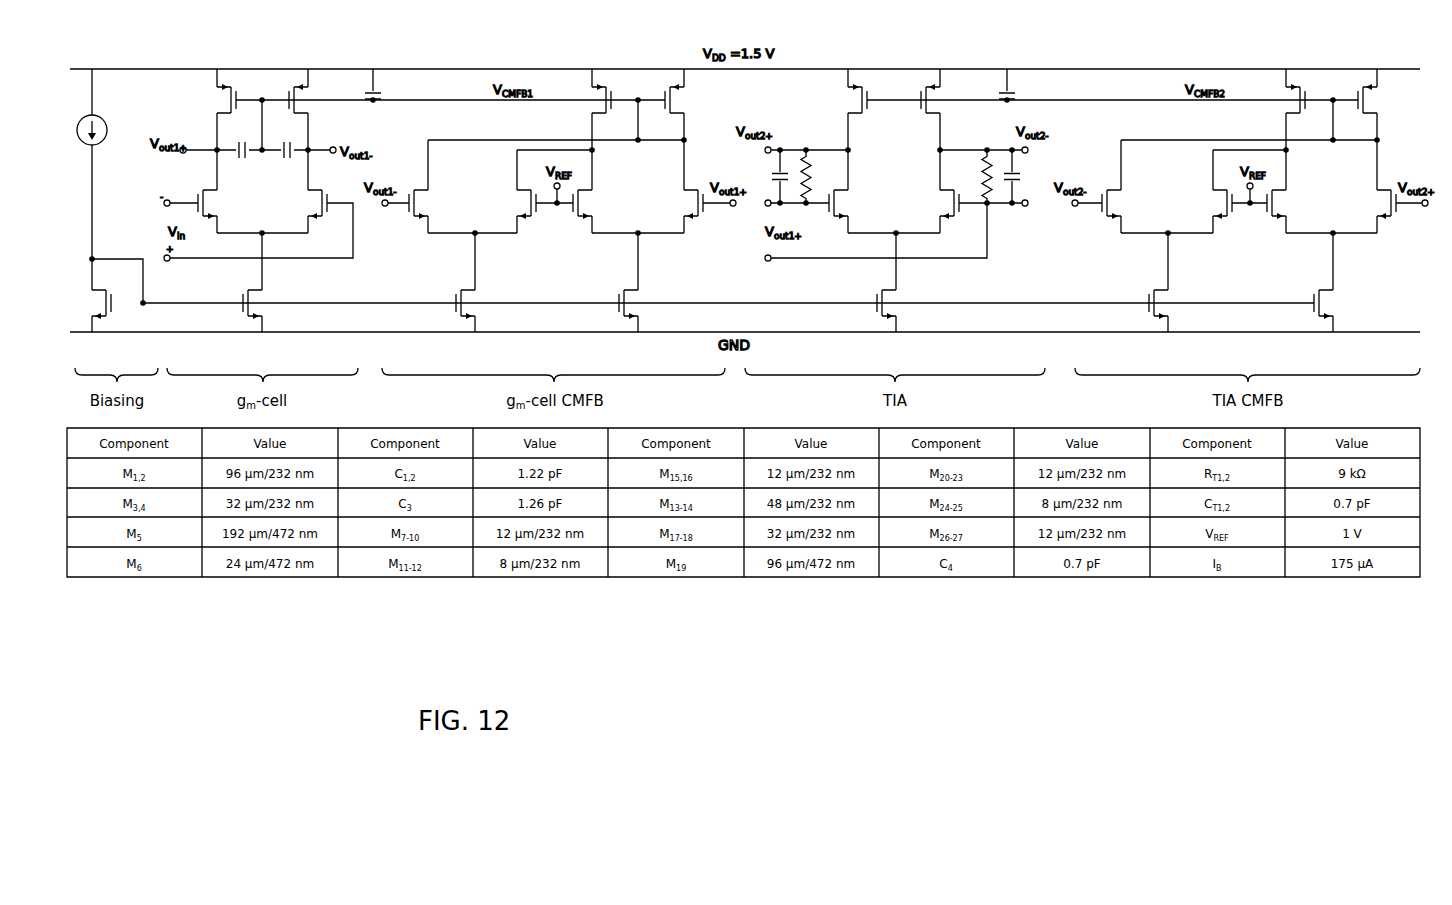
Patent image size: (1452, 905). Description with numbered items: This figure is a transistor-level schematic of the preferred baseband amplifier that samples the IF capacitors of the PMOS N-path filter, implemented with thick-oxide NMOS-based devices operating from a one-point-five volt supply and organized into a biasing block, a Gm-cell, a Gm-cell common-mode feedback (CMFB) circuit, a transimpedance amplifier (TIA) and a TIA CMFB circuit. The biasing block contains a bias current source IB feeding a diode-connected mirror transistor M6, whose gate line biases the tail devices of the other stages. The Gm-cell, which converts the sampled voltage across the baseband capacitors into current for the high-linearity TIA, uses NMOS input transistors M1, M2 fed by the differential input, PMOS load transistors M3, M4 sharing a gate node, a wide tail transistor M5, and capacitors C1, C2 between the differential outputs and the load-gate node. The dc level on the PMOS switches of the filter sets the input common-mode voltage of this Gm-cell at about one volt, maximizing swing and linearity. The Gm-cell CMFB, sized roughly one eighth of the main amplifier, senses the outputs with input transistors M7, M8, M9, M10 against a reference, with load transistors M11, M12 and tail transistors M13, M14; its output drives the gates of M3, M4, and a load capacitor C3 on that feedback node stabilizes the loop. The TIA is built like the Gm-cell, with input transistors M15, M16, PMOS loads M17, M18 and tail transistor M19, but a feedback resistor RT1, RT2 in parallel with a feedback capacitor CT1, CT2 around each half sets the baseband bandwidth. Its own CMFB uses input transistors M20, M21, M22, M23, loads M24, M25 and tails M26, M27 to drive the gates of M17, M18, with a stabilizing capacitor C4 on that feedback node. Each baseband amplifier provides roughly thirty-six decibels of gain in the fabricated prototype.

The bias current source IB is at (98, 107).
The gm-cell input transistor M1 is at (201, 191).
The gm-cell input transistor M2 is at (258, 205).
The gm-cell load transistor M3 is at (215, 109).
The gm-cell load transistor M4 is at (309, 109).
The gm-cell tail transistor M5 is at (238, 311).
The bias mirror transistor M6 is at (113, 311).
The gm-cell capacitor C1 is at (237, 161).
The gm-cell capacitor C2 is at (282, 161).
The CMFB compensation capacitor C3 is at (381, 85).
The gm-cell CMFB input transistor M7 is at (415, 186).
The gm-cell CMFB input transistor M8 is at (514, 191).
The gm-cell CMFB input transistor M9 is at (593, 211).
The gm-cell CMFB input transistor M10 is at (695, 211).
The gm-cell CMFB load transistor M11 is at (589, 129).
The gm-cell CMFB load transistor M12 is at (689, 129).
The gm-cell CMFB tail transistor M13 is at (451, 311).
The gm-cell CMFB tail transistor M14 is at (615, 311).
The TIA input transistor M15 is at (852, 211).
The TIA input transistor M16 is at (934, 211).
The TIA load transistor M17 is at (846, 129).
The TIA load transistor M18 is at (944, 129).
The TIA tail transistor M19 is at (873, 311).
The TIA feedback capacitor CT1 is at (769, 176).
The TIA feedback capacitor CT2 is at (1023, 176).
The TIA feedback resistor RT1 is at (817, 177).
The TIA feedback resistor RT2 is at (975, 177).
The TIA CMFB compensation capacitor C4 is at (1015, 85).
The TIA CMFB input transistor M20 is at (1110, 186).
The TIA CMFB input transistor M21 is at (1208, 191).
The TIA CMFB input transistor M22 is at (1290, 211).
The TIA CMFB input transistor M23 is at (1388, 211).
The TIA CMFB load transistor M24 is at (1283, 129).
The TIA CMFB load transistor M25 is at (1382, 129).
The TIA CMFB tail transistor M26 is at (1145, 311).
The TIA CMFB tail transistor M27 is at (1310, 311).